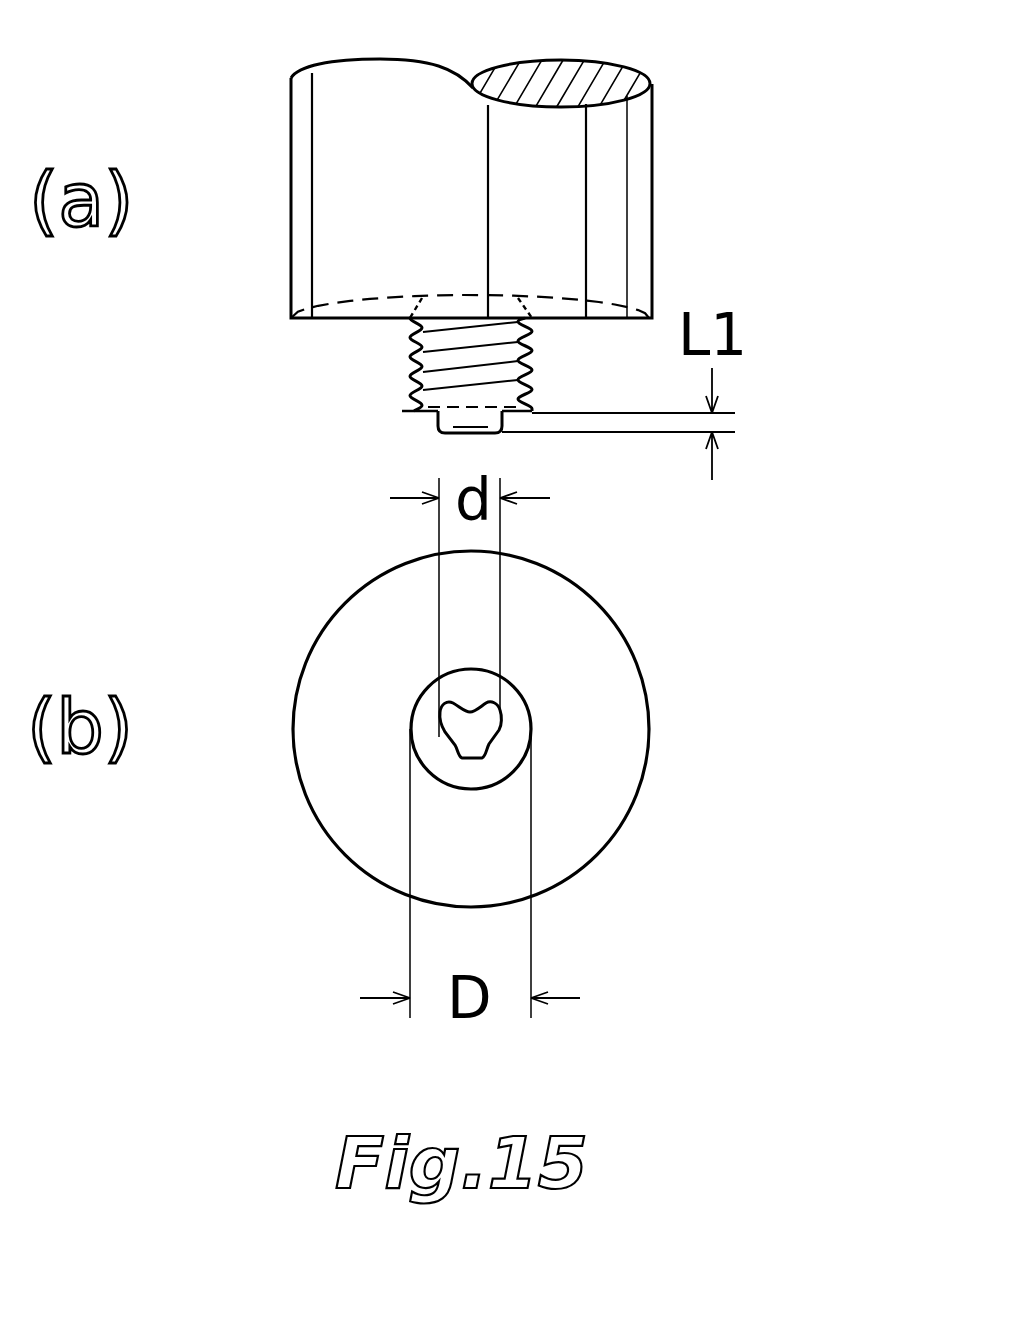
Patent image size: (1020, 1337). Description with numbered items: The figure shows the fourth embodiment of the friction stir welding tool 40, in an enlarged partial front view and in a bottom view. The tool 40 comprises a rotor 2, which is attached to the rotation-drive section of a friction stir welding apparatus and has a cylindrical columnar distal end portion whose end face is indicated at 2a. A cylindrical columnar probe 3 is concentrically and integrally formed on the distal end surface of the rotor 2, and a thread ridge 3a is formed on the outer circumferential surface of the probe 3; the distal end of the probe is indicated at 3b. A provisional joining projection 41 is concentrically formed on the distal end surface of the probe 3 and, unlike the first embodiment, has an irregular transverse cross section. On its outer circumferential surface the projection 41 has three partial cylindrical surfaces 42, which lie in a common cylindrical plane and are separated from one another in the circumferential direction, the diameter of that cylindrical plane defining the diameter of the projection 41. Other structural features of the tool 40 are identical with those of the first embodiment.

The friction stir welding tool 40 is at (690, 160).
The rotor 2 is at (643, 253).
The end face of base body 2a is at (320, 318).
The probe 3 is at (532, 353).
The thread ridge 3a is at (410, 368).
The shaft tip end 3b is at (418, 410).
The provisional joining projection 41 is at (456, 432).
The partial cylindrical surfaces 42 is at (497, 706).